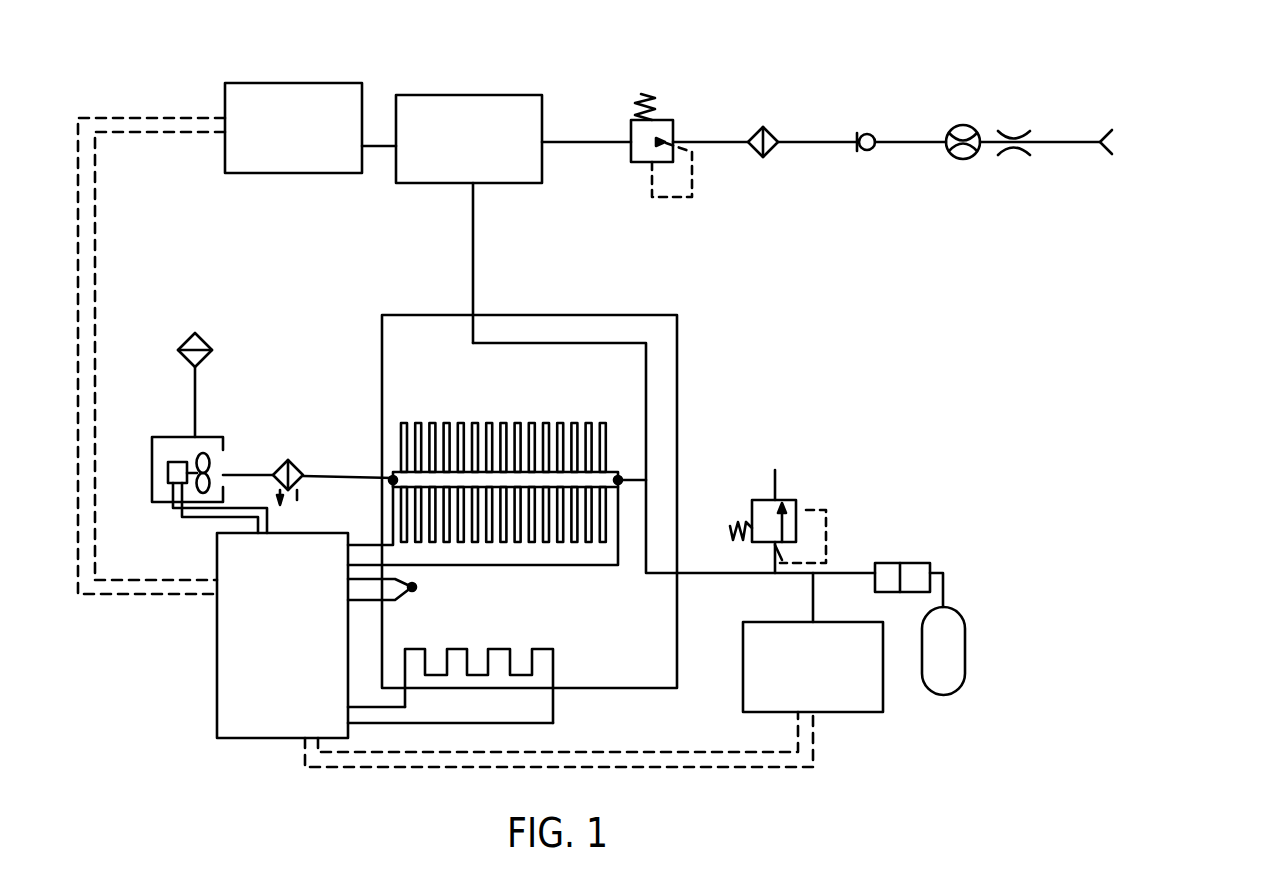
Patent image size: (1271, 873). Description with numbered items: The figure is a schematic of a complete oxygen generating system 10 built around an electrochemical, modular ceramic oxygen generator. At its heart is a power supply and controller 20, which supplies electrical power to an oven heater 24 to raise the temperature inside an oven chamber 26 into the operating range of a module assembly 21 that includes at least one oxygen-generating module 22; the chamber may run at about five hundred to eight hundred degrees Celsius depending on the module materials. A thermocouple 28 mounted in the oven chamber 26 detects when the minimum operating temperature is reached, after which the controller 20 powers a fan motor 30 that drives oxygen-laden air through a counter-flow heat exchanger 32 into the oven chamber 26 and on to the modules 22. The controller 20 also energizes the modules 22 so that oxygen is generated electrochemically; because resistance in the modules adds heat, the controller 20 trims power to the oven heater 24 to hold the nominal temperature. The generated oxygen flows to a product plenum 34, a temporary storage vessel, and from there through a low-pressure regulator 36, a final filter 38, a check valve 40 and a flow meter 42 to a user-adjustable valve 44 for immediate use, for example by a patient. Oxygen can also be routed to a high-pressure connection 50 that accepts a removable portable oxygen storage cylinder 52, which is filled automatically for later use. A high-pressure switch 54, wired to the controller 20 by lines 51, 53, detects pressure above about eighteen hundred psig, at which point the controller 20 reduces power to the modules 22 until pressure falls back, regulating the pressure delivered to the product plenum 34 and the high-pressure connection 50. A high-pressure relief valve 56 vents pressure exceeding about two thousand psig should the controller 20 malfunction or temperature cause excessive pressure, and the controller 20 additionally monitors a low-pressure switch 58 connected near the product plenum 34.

The oxygen generating system 10 is at (1062, 785).
The power supply and controller 20 is at (297, 700).
The module assembly 21 is at (418, 402).
The oxygen-generating module 22 is at (513, 405).
The oven heater 24 is at (548, 708).
The oven chamber 26 is at (644, 625).
The thermocouple 28 is at (464, 595).
The fan motor 30 is at (170, 487).
The counter-flow heat exchanger 32 is at (308, 439).
The product plenum 34 is at (513, 184).
The low-pressure regulator 36 is at (641, 164).
The final filter 38 is at (765, 160).
The check valve 40 is at (866, 153).
The flow meter 42 is at (963, 161).
The user-adjustable valve 44 is at (1181, 132).
The high-pressure connection 50 is at (890, 563).
The line 51 is at (688, 752).
The portable oxygen storage cylinder 52 is at (965, 655).
The line 53 is at (688, 768).
The high-pressure switch 54 is at (862, 712).
The high-pressure relief valve 56 is at (782, 500).
The low-pressure switch 58 is at (313, 174).